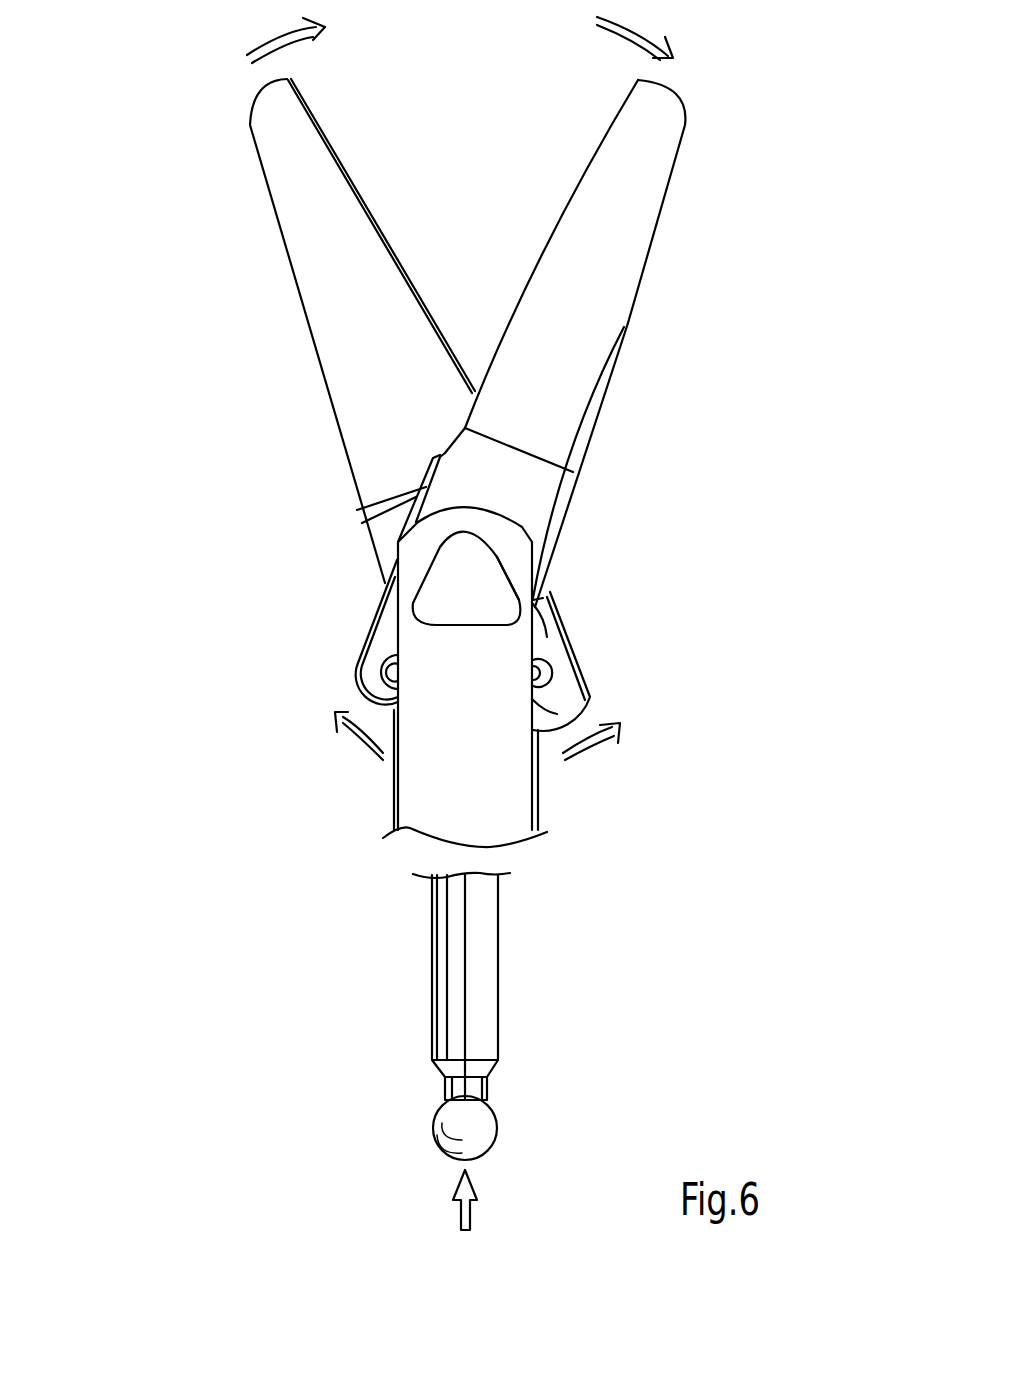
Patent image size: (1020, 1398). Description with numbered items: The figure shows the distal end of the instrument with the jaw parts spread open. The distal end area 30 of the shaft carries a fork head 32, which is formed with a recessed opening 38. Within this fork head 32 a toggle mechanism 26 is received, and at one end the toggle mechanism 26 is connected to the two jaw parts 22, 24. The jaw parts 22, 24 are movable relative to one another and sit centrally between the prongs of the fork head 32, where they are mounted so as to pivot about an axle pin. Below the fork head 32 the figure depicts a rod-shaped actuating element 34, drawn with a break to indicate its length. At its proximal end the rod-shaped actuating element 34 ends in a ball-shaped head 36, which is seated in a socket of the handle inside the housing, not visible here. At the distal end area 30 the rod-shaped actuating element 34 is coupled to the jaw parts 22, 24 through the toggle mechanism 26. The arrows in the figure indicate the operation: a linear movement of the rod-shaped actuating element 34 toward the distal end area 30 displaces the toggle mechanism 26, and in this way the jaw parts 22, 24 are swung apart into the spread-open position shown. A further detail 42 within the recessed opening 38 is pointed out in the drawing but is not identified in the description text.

The first handle 22 is at (363, 302).
The second handle 24 is at (598, 272).
The jaw part 26 is at (565, 692).
The pivot connection 30 is at (313, 650).
The sleeve housing 32 is at (467, 780).
The shaft 34 is at (477, 973).
The ball head 36 is at (482, 1125).
The opening 38 is at (490, 555).
The bearing surface 42 is at (485, 586).